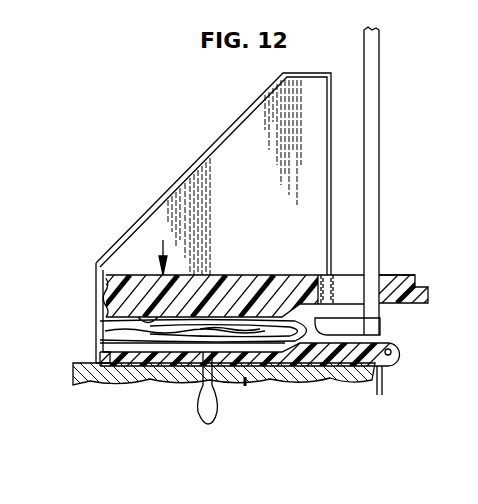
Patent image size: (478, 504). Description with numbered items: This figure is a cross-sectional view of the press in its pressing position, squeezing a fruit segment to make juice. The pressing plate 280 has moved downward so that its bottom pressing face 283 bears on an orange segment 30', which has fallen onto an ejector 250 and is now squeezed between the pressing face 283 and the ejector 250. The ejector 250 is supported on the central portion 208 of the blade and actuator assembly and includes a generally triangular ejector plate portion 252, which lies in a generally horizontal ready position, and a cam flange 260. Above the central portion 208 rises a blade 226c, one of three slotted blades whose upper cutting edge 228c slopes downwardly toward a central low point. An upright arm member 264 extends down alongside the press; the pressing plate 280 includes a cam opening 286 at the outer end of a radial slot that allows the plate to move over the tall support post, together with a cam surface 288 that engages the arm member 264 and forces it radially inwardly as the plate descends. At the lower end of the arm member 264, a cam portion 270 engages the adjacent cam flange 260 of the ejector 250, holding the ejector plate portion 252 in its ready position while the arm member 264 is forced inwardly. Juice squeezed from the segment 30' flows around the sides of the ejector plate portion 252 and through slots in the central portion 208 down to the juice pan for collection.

The arm member 264 is at (376, 78).
The upper cutting edge 228c is at (172, 187).
The blade 226c is at (265, 219).
The cam opening 286 is at (347, 285).
The cam surface 288 is at (374, 292).
The pressing plate 280 is at (140, 285).
The bottom pressing face 283 is at (105, 293).
The orange segment 30' is at (172, 333).
The cam portion 270 is at (365, 326).
The cam flange 260 is at (362, 358).
The central portion 208 is at (108, 387).
The ejector plate portion 252 is at (162, 382).
The ejector 250 is at (245, 383).